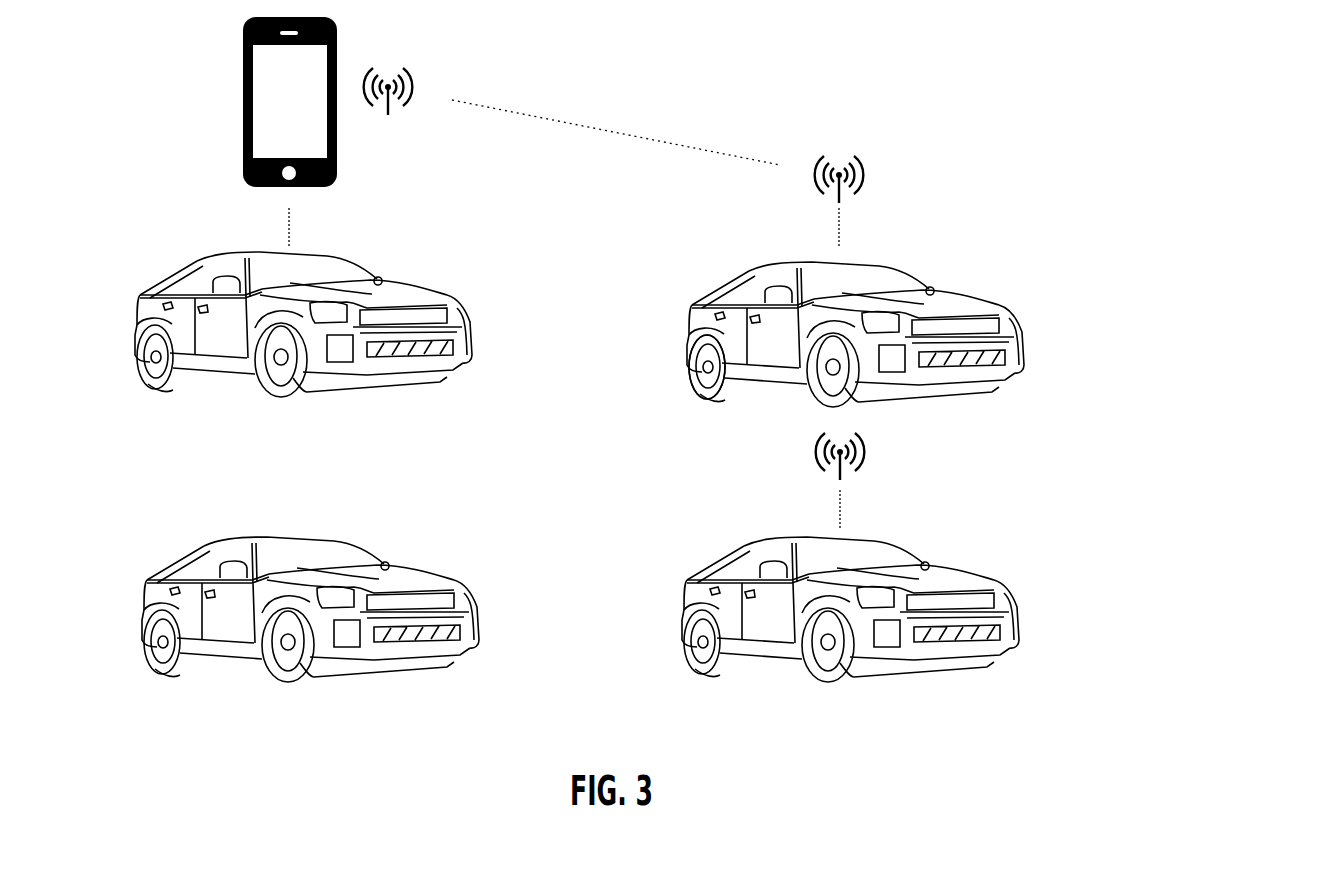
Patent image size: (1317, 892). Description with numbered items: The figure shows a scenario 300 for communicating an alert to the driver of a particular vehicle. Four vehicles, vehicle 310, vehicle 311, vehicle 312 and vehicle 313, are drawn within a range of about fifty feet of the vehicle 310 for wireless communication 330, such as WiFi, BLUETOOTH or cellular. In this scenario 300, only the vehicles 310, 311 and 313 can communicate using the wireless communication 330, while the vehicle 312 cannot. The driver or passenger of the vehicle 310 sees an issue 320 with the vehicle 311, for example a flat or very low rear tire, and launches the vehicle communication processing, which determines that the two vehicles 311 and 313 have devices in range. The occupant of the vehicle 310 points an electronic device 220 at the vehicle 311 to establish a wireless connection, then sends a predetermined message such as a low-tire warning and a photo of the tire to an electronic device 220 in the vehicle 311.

The scenario 300 is at (1233, 70).
The electronic device 220 is at (225, 61).
The vehicle 310 is at (143, 300).
The vehicle 311 is at (695, 310).
The vehicle 312 is at (150, 585).
The vehicle 313 is at (690, 585).
The issue 320 is at (708, 397).
The wireless communication 330 is at (418, 68).